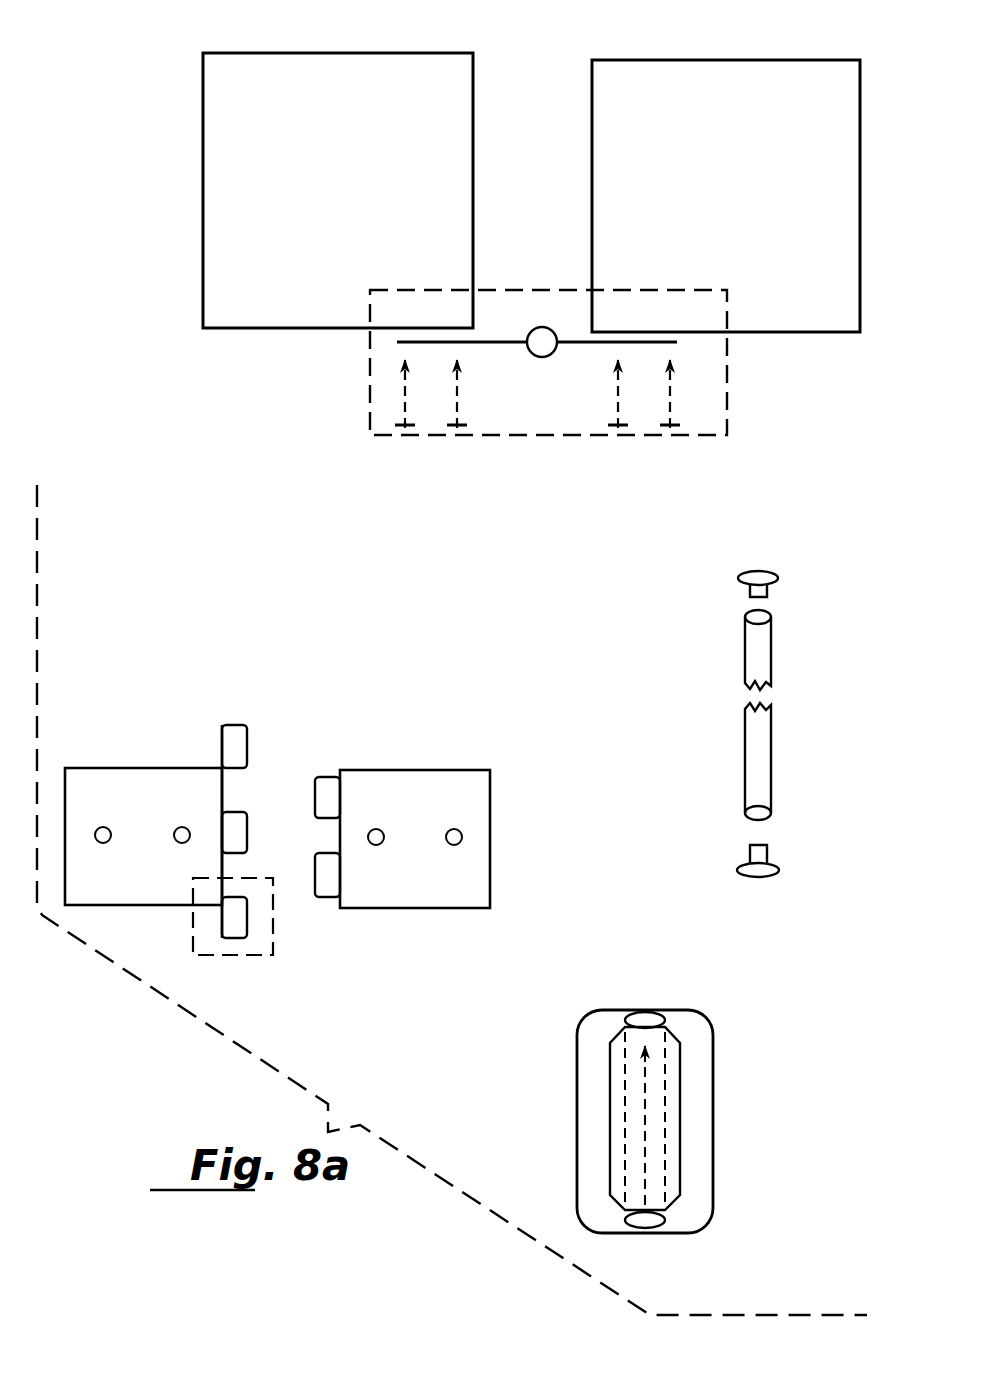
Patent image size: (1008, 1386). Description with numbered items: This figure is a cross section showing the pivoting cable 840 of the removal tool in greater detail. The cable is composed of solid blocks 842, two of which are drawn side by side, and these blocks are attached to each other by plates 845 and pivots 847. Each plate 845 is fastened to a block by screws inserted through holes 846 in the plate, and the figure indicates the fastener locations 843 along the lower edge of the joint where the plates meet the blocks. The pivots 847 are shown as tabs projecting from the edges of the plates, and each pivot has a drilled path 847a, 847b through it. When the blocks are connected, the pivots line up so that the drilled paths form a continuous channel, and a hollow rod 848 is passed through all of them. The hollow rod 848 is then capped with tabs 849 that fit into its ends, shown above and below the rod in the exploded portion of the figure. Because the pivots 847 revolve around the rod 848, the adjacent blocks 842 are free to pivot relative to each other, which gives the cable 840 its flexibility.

The pivoting cable 840 is at (107, 112).
The solid blocks 842 is at (588, 116).
The fasteners / attachment points 843 is at (414, 440).
The plates 845 is at (732, 381).
The holes 846 is at (385, 828).
The pivots 847 is at (313, 772).
The drilled path 847a is at (652, 1006).
The drilled path 847b is at (645, 1233).
The hollow rod 848 is at (742, 729).
The tabs 849 is at (778, 572).